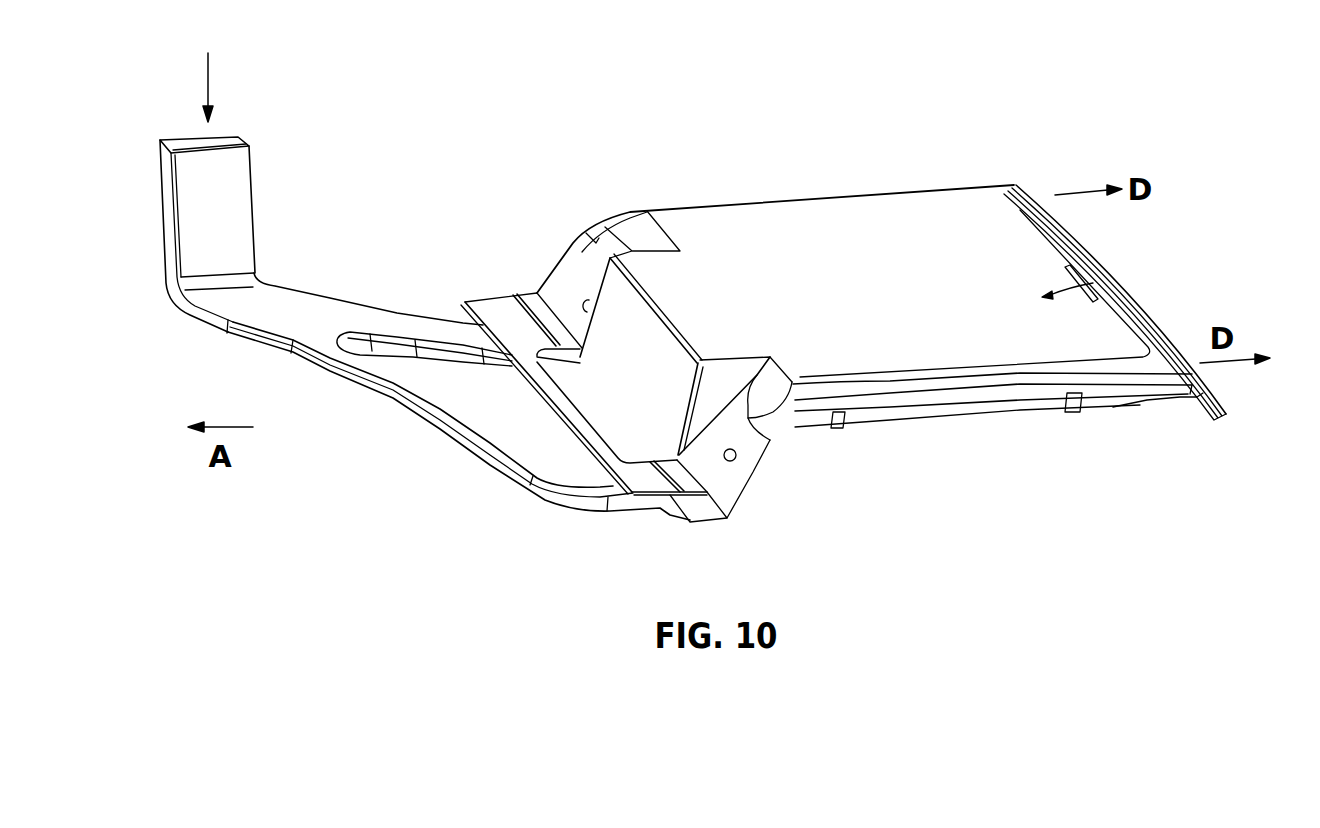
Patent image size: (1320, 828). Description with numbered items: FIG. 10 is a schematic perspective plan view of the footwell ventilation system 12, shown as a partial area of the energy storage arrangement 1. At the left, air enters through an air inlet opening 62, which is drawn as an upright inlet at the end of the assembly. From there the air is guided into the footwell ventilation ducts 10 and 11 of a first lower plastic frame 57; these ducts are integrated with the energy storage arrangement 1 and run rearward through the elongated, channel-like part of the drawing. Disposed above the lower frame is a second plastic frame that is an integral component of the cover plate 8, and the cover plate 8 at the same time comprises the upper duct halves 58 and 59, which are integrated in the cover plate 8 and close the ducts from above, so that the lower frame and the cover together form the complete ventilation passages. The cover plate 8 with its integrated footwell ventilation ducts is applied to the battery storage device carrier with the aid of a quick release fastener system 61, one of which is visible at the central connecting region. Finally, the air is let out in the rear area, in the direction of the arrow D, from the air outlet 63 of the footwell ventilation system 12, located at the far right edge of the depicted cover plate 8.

The energy storage arrangement 1 is at (1100, 265).
The cover plate 8 is at (988, 160).
The footwell ventilation duct 10 is at (456, 438).
The footwell ventilation duct 11 is at (408, 323).
The footwell ventilation system 12 is at (240, 233).
The first lower plastic frame 57 is at (1172, 393).
The upper duct half 58 is at (800, 213).
The upper duct half 59 is at (878, 368).
The quick release fastener system 61 is at (728, 470).
The air inlet opening 62 is at (228, 142).
The air outlet 63 is at (1133, 310).